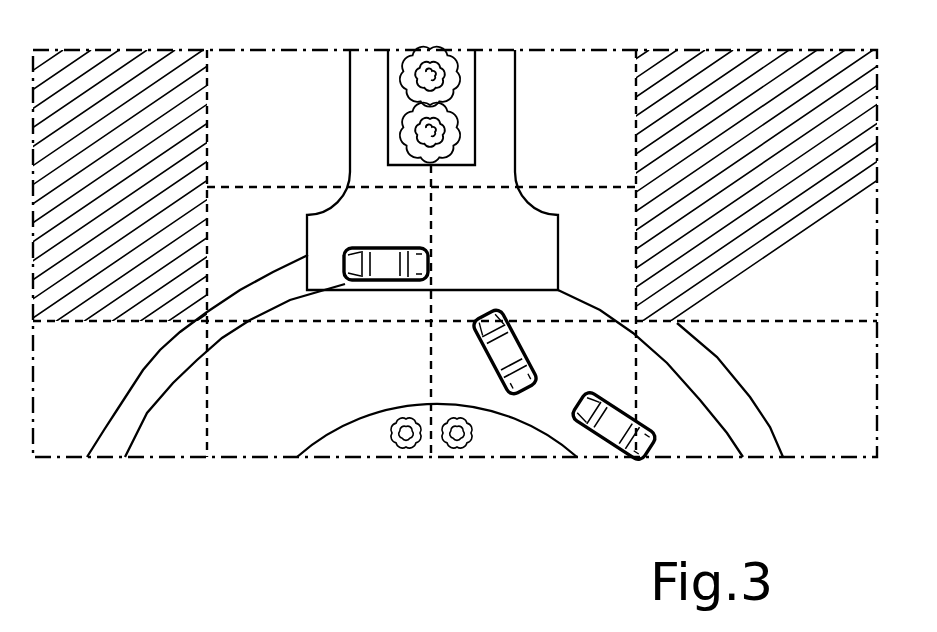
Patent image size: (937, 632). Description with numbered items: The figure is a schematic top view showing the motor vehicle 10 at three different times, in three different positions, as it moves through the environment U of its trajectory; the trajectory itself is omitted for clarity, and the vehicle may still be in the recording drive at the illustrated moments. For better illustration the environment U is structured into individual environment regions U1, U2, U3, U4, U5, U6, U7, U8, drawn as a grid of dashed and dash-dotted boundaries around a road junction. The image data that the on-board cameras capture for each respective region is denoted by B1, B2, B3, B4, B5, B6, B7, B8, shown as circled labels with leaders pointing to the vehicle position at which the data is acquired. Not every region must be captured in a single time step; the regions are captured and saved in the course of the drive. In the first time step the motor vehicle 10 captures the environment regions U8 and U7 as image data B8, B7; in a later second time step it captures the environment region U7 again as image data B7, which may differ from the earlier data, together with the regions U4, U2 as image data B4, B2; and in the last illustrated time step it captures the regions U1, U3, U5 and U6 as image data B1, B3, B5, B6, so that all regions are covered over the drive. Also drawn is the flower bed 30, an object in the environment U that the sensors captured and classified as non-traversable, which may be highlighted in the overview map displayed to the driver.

The motor vehicle 10 is at (408, 243).
The flower bed 30 is at (383, 82).
The environment U is at (651, 162).
The environment region U1 is at (282, 85).
The environment region U2 is at (550, 85).
The environment region U3 is at (208, 213).
The environment region U4 is at (640, 193).
The environment region U5 is at (95, 350).
The environment region U6 is at (348, 443).
The environment region U7 is at (543, 443).
The environment region U8 is at (798, 350).
The image data B1 is at (370, 239).
The image data B2 is at (504, 294).
The image data B3 is at (340, 267).
The image data B4 is at (523, 321).
The image data B5 is at (348, 285).
The image data B6 is at (377, 290).
The image data B7 is at (533, 358).
The image data B8 is at (658, 431).